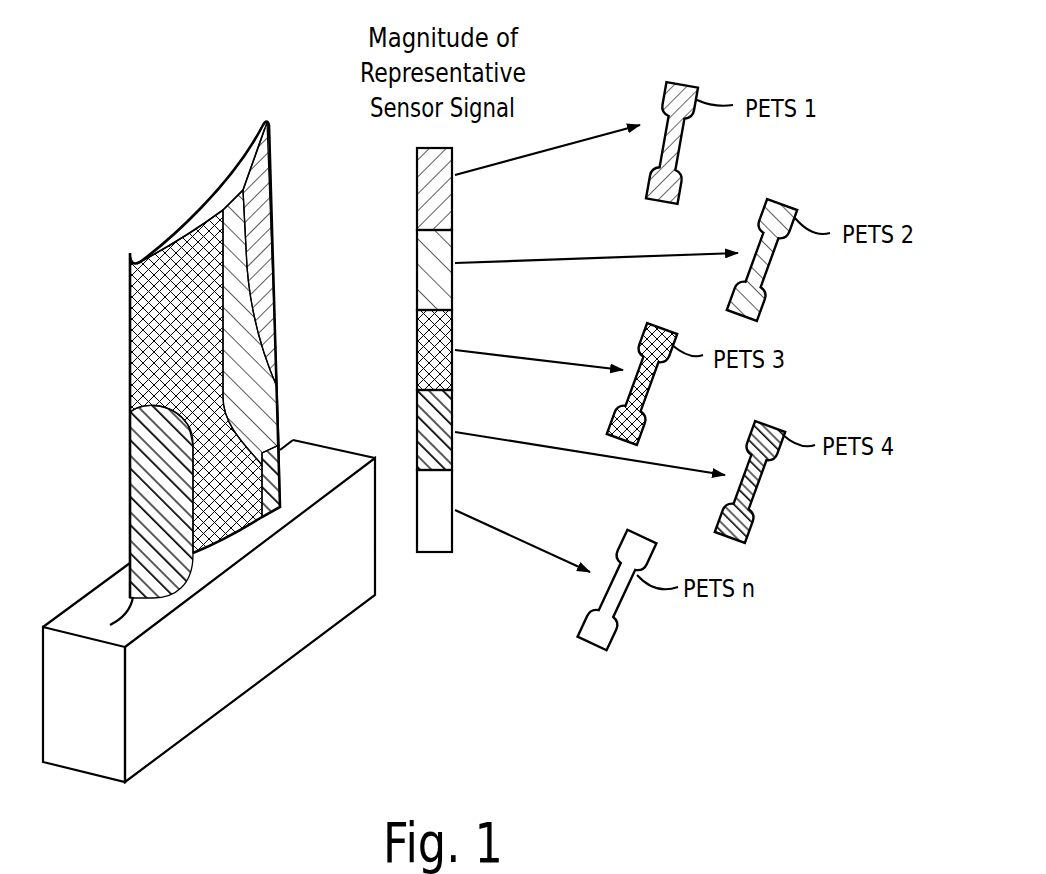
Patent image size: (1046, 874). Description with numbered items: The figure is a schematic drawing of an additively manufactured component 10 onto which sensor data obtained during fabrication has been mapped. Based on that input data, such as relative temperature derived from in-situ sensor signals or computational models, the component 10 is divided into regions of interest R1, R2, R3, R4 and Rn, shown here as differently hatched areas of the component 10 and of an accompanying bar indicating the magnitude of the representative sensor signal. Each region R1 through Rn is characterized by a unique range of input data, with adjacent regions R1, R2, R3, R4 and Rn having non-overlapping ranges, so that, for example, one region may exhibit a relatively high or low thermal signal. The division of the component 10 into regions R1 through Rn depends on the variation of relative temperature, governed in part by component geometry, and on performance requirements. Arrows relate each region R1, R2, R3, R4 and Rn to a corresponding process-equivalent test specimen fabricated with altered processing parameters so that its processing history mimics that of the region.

The component 10 is at (193, 391).
The first region of interest R1 is at (257, 205).
The second region of interest R2 is at (248, 397).
The third region of interest R3 is at (173, 328).
The fourth region of interest R4 is at (143, 488).
The nth region of interest Rn is at (266, 631).